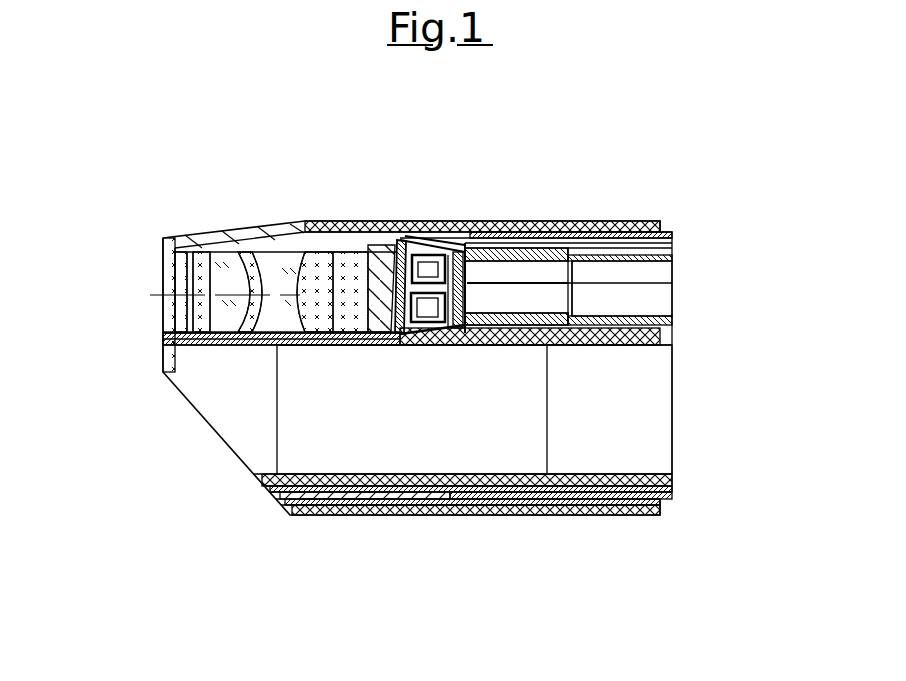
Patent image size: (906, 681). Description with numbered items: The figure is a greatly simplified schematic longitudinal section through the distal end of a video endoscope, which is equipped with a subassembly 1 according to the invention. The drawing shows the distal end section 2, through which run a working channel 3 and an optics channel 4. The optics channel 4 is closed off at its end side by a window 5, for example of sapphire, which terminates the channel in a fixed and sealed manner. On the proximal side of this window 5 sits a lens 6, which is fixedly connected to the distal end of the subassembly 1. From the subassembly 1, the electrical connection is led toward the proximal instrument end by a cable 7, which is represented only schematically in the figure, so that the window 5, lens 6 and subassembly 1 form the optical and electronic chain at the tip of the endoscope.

The subassembly 1 is at (456, 249).
The distal end section 2 is at (258, 492).
The working channel 3 is at (440, 430).
The optics channel 4 is at (655, 298).
The window 5 is at (168, 311).
The lens 6 is at (250, 325).
The cable 7 is at (654, 281).